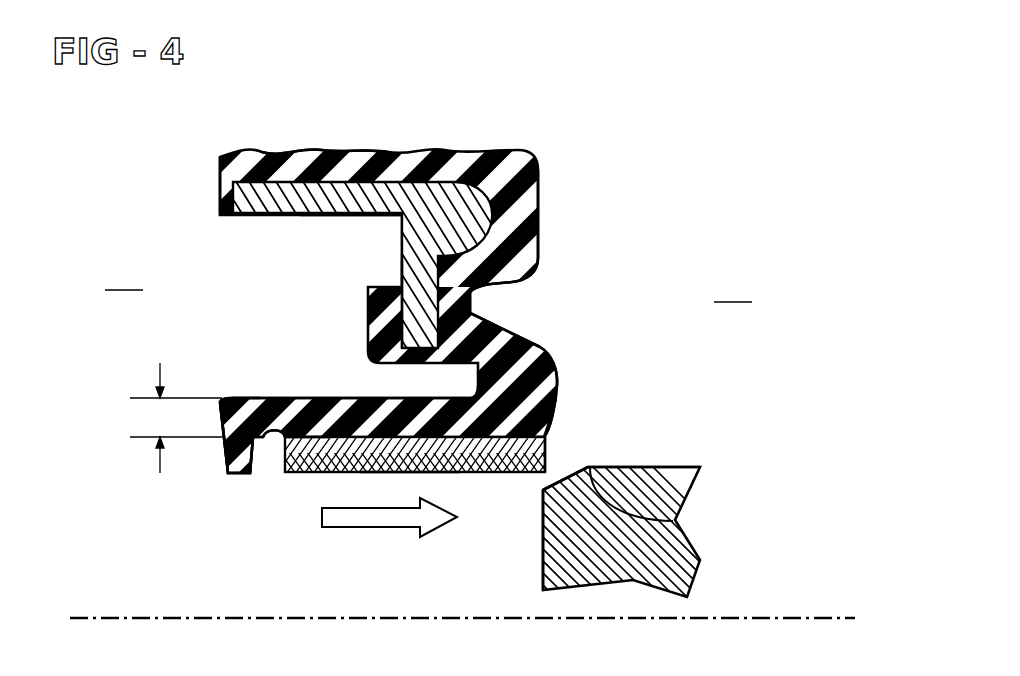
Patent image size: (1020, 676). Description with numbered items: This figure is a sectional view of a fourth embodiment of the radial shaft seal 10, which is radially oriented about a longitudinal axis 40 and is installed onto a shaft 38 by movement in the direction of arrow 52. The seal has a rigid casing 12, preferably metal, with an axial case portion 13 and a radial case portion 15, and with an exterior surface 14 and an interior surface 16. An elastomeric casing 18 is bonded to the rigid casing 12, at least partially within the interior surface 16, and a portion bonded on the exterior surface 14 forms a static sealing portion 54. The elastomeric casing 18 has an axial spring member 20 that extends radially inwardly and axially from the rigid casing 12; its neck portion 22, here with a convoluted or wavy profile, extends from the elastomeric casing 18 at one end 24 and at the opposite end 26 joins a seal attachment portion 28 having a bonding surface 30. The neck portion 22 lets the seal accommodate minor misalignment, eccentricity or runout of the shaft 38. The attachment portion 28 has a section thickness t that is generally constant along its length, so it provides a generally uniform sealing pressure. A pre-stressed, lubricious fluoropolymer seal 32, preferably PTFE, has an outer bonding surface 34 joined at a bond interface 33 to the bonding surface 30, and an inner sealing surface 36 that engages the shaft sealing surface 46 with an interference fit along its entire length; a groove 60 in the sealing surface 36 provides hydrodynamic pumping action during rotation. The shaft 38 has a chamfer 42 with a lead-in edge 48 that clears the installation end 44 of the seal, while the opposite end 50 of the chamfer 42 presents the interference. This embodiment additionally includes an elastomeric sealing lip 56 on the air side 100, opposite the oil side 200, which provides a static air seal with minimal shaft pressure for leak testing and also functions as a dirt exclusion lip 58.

The radial shaft seal 10 is at (526, 146).
The rigid casing 12 is at (430, 200).
The axial case portion 13 is at (242, 162).
The exterior surface 14 is at (402, 150).
The radial case portion 15 is at (410, 280).
The interior surface 16 is at (400, 264).
The elastomeric casing 18 is at (513, 278).
The axial spring member 20 is at (550, 357).
The neck portion 22 is at (545, 343).
The one end of neck portion 24 is at (470, 307).
The opposite end of neck portion 26 is at (547, 405).
The seal attachment portion 28 is at (352, 400).
The bonding surface 30 is at (550, 443).
The fluoropolymer seal 32 is at (277, 437).
The bond interface 33 is at (532, 433).
The bonding surface of fluoropolymer seal 34 is at (290, 432).
The sealing surface 36 is at (405, 473).
The shaft 38 is at (655, 485).
The longitudinal axis 40 is at (138, 617).
The chamfer 42 is at (567, 477).
The installation end 44 is at (550, 462).
The shaft sealing surface 46 is at (667, 467).
The lead-in edge 48 is at (540, 492).
The opposite end of chamfer 50 is at (633, 523).
The arrow 52 is at (362, 527).
The static sealing portion 54 is at (318, 150).
The elastomeric sealing lip 56 is at (226, 408).
The exclusion lip 58 is at (226, 408).
The groove 60 is at (338, 473).
The air side 100 is at (124, 280).
The oil side 200 is at (733, 292).
The section thickness t is at (160, 363).